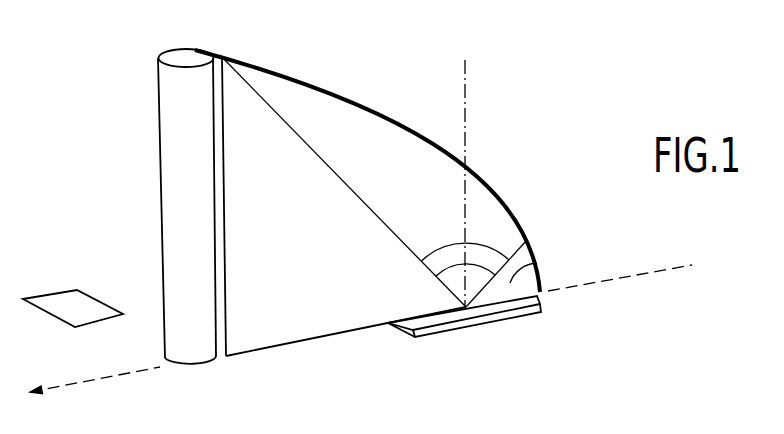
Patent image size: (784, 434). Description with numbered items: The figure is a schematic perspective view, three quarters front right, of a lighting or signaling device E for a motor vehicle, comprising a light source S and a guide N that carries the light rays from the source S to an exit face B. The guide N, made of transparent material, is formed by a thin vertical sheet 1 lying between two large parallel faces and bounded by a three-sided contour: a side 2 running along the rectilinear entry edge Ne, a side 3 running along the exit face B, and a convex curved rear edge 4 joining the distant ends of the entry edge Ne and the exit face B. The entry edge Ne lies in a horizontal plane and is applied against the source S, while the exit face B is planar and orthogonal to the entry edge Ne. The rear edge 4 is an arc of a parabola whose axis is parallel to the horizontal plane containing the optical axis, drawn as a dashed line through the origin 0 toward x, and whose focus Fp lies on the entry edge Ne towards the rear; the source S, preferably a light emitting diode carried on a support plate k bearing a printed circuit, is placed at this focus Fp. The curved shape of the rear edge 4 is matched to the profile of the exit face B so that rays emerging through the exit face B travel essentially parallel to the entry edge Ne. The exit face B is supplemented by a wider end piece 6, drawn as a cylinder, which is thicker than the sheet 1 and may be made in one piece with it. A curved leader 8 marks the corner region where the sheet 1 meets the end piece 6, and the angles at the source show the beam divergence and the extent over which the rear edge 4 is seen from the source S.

The sheet 1 is at (413, 168).
The side 2 is at (380, 327).
The side 3 is at (225, 212).
The rear edge 4 is at (483, 180).
The end piece 6 is at (182, 258).
The generatrix ray 8 is at (218, 97).
The lighting or signaling device E is at (157, 188).
The guide N is at (357, 157).
The exit face B is at (218, 307).
The entry edge Ne is at (340, 335).
The focus Fp is at (455, 312).
The light source S is at (490, 316).
The support plate k is at (505, 308).
The optical axis x is at (95, 392).
The optical axis origin 0 is at (630, 276).